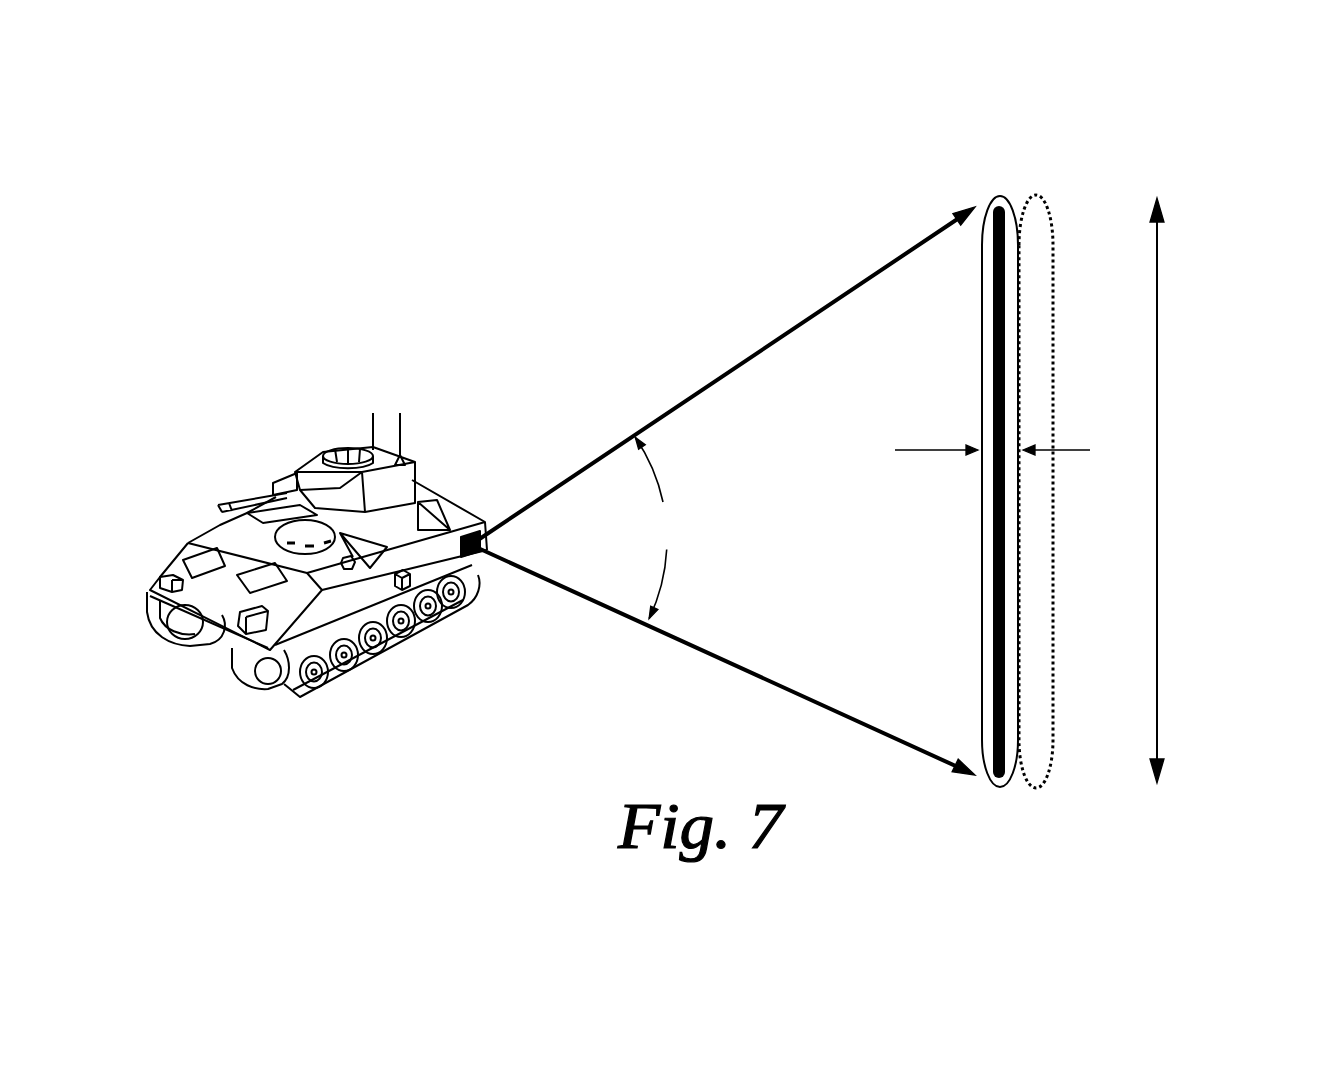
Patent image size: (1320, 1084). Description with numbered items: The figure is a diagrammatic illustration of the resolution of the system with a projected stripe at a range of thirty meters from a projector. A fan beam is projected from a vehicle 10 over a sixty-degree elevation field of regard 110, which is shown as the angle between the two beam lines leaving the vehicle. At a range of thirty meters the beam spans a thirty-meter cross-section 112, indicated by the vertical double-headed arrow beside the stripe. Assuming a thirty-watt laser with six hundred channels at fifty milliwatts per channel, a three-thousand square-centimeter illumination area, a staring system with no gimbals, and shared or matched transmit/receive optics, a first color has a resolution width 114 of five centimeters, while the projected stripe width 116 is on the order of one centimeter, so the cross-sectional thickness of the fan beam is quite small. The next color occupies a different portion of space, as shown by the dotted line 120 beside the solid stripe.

The vehicle 10 is at (300, 450).
The 60° elevation field of regard 110 is at (726, 491).
The 30-meter cross-section 112 is at (1157, 353).
The resolution width 114 is at (981, 431).
The projected stripe width 116 is at (1012, 561).
The next color 120 is at (1062, 838).